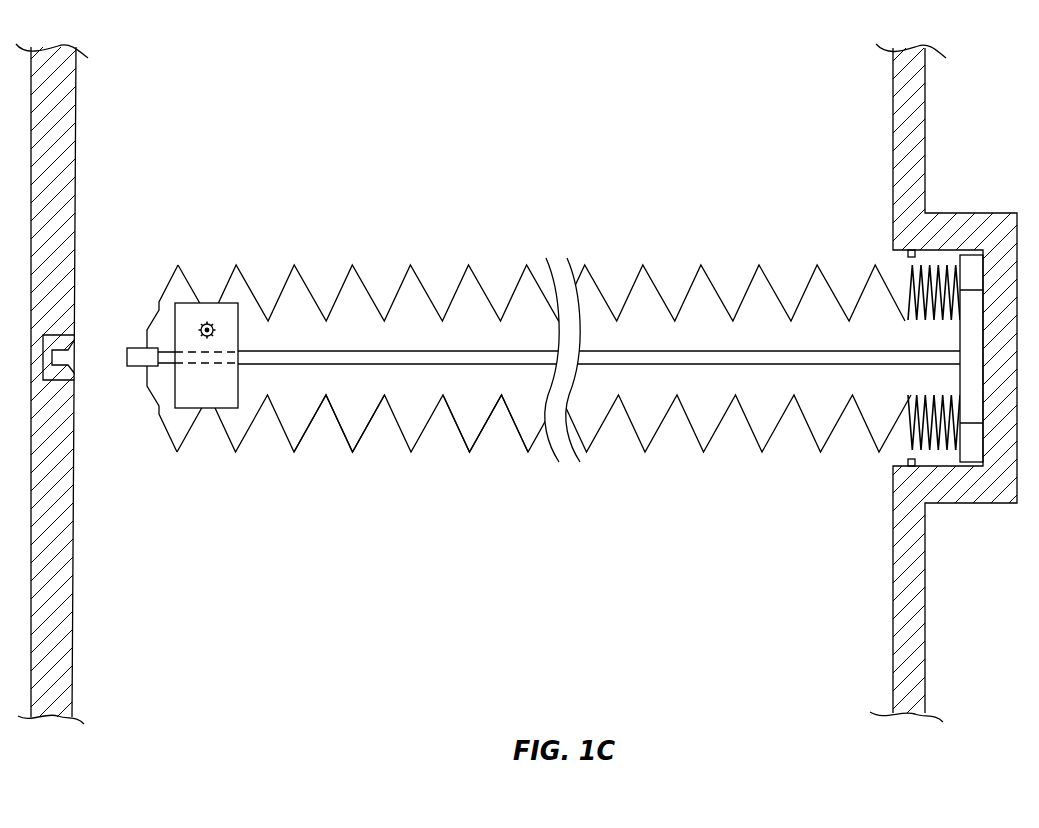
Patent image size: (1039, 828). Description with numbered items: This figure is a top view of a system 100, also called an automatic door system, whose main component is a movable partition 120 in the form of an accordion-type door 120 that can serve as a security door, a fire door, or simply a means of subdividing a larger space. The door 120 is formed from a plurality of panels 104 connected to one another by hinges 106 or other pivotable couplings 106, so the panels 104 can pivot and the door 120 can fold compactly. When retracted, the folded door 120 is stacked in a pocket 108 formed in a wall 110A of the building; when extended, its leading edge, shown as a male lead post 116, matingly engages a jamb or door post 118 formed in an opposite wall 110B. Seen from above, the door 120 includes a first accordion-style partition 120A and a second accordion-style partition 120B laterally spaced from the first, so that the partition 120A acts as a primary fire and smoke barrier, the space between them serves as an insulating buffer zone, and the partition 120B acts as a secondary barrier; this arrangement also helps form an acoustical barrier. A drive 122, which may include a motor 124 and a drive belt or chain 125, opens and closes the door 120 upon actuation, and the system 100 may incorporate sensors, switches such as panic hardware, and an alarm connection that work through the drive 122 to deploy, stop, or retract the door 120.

The system 100 is at (531, 344).
The panels 104 is at (308, 432).
The hinges 106 is at (473, 452).
The pocket 108 is at (893, 459).
The wall 110A is at (891, 631).
The wall 110B is at (73, 603).
The male lead post 116 is at (128, 342).
The door post 118 is at (75, 363).
The movable partition 120 is at (432, 340).
The first accordion-style partition 120A is at (732, 278).
The second accordion-style partition 120B is at (657, 439).
The drive 122 is at (214, 434).
The motor 124 is at (207, 322).
The drive belt or chain 125 is at (295, 351).